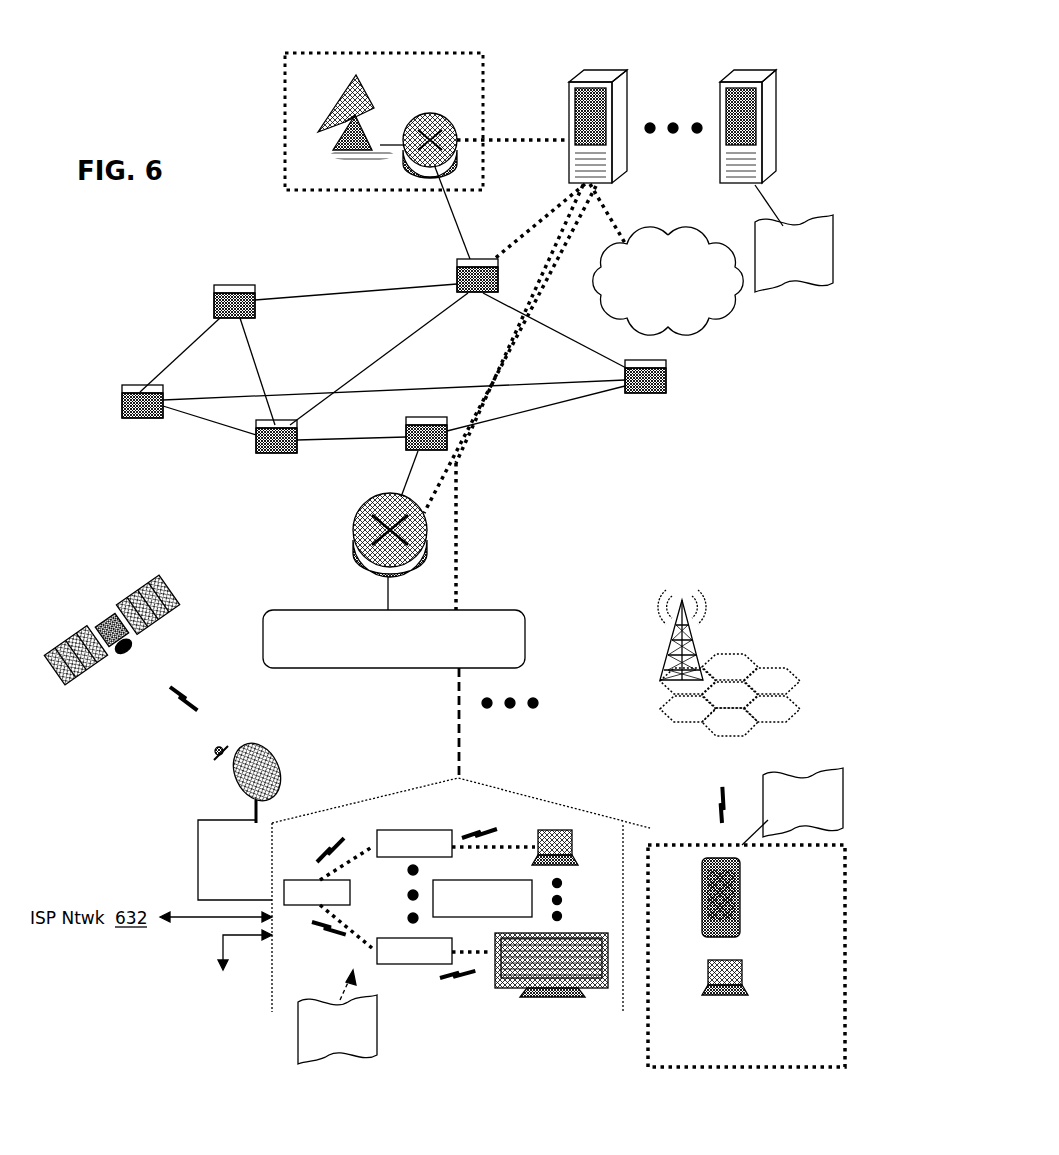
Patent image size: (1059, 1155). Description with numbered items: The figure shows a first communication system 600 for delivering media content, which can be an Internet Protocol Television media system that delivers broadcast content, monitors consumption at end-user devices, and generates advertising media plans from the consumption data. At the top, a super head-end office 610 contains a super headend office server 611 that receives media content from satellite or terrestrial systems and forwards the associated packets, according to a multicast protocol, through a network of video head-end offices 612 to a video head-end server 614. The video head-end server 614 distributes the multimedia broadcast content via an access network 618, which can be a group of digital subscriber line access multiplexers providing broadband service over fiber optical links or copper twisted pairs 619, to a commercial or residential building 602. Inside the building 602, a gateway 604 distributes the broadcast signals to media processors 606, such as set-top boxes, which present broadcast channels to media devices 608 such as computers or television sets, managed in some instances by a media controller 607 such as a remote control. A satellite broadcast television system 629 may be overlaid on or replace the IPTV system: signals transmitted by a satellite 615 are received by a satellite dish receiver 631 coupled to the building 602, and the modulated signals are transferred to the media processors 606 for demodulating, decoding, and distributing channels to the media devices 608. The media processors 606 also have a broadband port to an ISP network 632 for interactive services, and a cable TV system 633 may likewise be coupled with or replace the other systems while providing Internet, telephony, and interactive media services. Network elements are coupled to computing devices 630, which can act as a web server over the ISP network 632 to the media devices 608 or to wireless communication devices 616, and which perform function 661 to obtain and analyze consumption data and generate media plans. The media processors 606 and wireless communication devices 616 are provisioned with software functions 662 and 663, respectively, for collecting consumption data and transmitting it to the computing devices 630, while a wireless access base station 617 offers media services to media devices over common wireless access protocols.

The communication system 600 is at (135, 143).
The building 602 is at (462, 1034).
The gateway 604 is at (338, 903).
The media processor 606 is at (448, 855).
The media controller 607 is at (522, 909).
The media device 608 is at (560, 830).
The super head-end office 610 is at (280, 127).
The super headend office server 611 is at (407, 121).
The video head-end offices 612 is at (122, 400).
The video head-end server 614 is at (354, 540).
The satellite 615 is at (75, 636).
The wireless communication device 616 is at (750, 872).
The wireless access base station 617 is at (728, 655).
The access network 618 is at (527, 633).
The copper twisted pairs 619 is at (455, 748).
The satellite broadcast television system 629 is at (190, 668).
The computing devices 630 is at (750, 70).
The satellite dish receiver 631 is at (182, 821).
The ISP network 632 is at (686, 319).
The cable TV system 633 is at (204, 1030).
The function 661 is at (807, 263).
The software function 662 is at (351, 1045).
The software function 663 is at (819, 813).